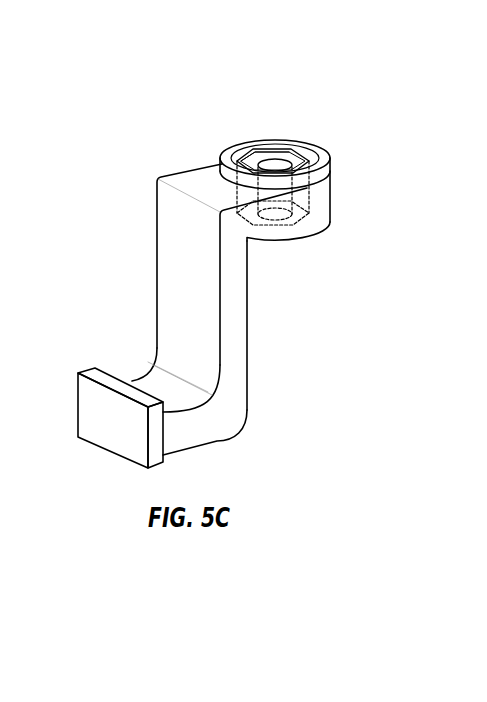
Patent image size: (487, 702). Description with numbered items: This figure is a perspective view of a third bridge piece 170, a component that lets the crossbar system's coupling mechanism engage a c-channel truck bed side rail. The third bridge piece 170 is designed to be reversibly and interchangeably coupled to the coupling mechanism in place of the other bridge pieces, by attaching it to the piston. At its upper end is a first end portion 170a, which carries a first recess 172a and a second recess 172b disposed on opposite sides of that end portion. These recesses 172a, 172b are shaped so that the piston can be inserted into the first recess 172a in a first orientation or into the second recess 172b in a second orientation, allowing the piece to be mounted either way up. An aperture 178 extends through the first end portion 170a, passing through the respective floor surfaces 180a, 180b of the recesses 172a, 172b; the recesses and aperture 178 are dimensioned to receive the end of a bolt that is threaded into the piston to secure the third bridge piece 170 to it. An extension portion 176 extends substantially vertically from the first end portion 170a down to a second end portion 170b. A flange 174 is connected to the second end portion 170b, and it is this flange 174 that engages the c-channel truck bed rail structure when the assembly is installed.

The third bridge piece 170 is at (213, 276).
The first end portion 170a is at (287, 192).
The second end portion 170b is at (131, 379).
The first recess 172a is at (297, 153).
The second recess 172b is at (300, 217).
The flange 174 is at (90, 372).
The extension portion 176 is at (238, 322).
The aperture 178 is at (274, 164).
The floor surface 180a is at (250, 162).
The floor surface 180b is at (267, 222).